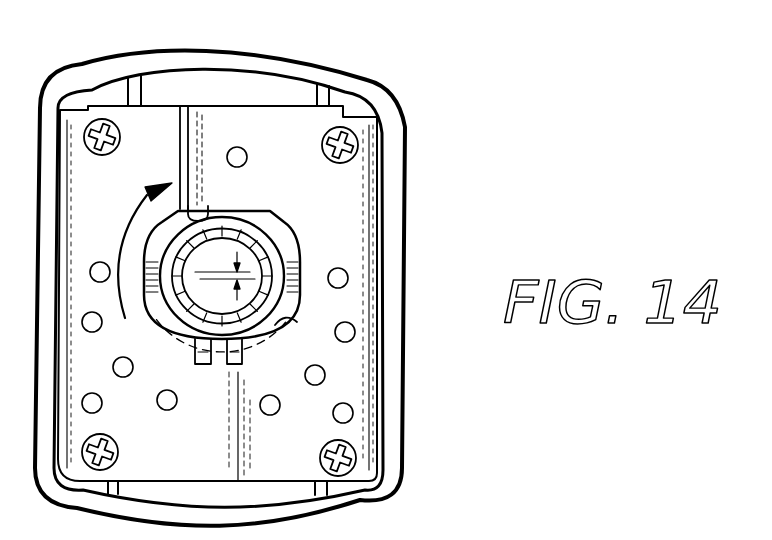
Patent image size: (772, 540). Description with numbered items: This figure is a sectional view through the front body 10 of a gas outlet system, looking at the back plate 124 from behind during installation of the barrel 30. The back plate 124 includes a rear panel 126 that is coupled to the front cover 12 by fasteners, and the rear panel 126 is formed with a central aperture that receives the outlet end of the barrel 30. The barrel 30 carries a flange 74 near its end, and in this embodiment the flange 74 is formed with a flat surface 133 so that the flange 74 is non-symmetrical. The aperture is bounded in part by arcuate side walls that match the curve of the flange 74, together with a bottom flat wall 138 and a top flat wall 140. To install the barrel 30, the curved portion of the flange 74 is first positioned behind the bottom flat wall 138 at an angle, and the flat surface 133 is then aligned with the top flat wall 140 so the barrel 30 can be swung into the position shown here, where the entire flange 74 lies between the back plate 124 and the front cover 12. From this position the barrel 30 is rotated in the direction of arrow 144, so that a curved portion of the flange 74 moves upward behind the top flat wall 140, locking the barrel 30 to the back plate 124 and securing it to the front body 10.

The front body 10 is at (442, 86).
The front cover 12 is at (212, 53).
The barrel 30 is at (188, 308).
The flange 74 is at (293, 298).
The back plate 124 is at (335, 237).
The rear panel 126 is at (213, 117).
The flat surface 133 is at (243, 213).
The bottom flat wall 138 is at (283, 318).
The top flat wall 140 is at (207, 213).
The arrow 144 is at (125, 247).